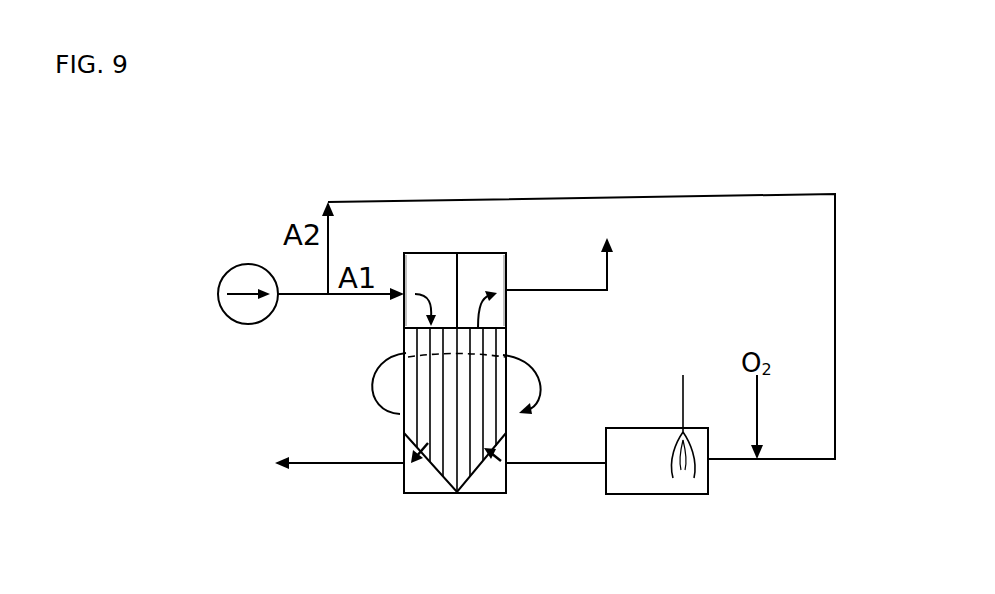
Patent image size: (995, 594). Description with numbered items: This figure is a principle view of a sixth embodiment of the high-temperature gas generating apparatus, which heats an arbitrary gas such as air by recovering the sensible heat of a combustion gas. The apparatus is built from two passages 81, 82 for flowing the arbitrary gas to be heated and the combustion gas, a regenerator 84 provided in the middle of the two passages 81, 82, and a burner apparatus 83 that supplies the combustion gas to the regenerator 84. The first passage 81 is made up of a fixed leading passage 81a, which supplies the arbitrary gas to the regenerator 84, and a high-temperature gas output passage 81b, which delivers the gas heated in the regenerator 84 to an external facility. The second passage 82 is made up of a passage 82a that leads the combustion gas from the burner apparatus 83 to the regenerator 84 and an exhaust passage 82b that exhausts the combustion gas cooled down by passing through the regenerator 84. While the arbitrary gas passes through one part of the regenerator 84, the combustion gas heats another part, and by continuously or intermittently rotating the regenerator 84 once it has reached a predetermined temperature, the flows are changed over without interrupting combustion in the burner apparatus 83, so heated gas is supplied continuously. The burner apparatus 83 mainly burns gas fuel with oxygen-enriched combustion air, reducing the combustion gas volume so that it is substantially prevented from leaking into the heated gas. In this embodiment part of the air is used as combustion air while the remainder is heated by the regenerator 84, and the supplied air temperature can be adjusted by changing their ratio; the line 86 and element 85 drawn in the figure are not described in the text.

The passage 81 is at (300, 340).
The leading passage 81a is at (411, 312).
The high-temperature gas output passage 81b is at (405, 446).
The passage 82 is at (648, 310).
The combustion gas leading passage 82a is at (503, 440).
The exhaust passage 82b is at (497, 312).
The burner apparatus 83 is at (638, 495).
The regenerator 84 is at (488, 360).
The igniter / burner 85 is at (686, 399).
The recirculation line 86 is at (836, 350).